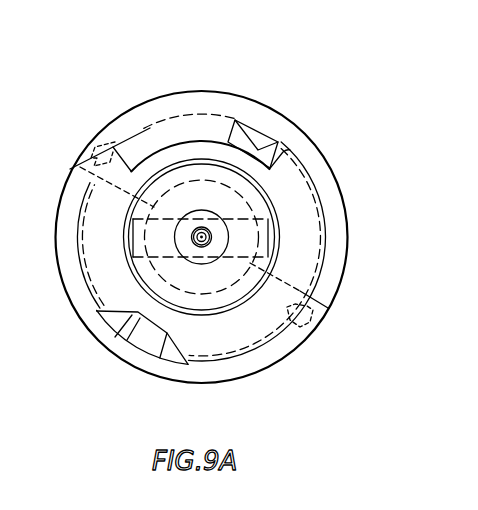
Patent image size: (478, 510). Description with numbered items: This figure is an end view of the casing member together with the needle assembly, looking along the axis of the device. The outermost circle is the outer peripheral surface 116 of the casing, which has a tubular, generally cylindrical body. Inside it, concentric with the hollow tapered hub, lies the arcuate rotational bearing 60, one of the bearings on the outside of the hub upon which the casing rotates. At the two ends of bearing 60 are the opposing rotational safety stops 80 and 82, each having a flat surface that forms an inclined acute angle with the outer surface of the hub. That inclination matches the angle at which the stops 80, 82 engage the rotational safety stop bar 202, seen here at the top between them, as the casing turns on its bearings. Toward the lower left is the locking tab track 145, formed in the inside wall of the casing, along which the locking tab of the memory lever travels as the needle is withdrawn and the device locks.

The outer peripheral surface 116 is at (183, 91).
The arcuate rotational bearing 60 is at (307, 225).
The rotational safety stop 80 is at (130, 140).
The rotational safety stop bar 202 is at (255, 133).
The rotational safety stop 82 is at (282, 157).
The locking tab track 145 is at (147, 345).